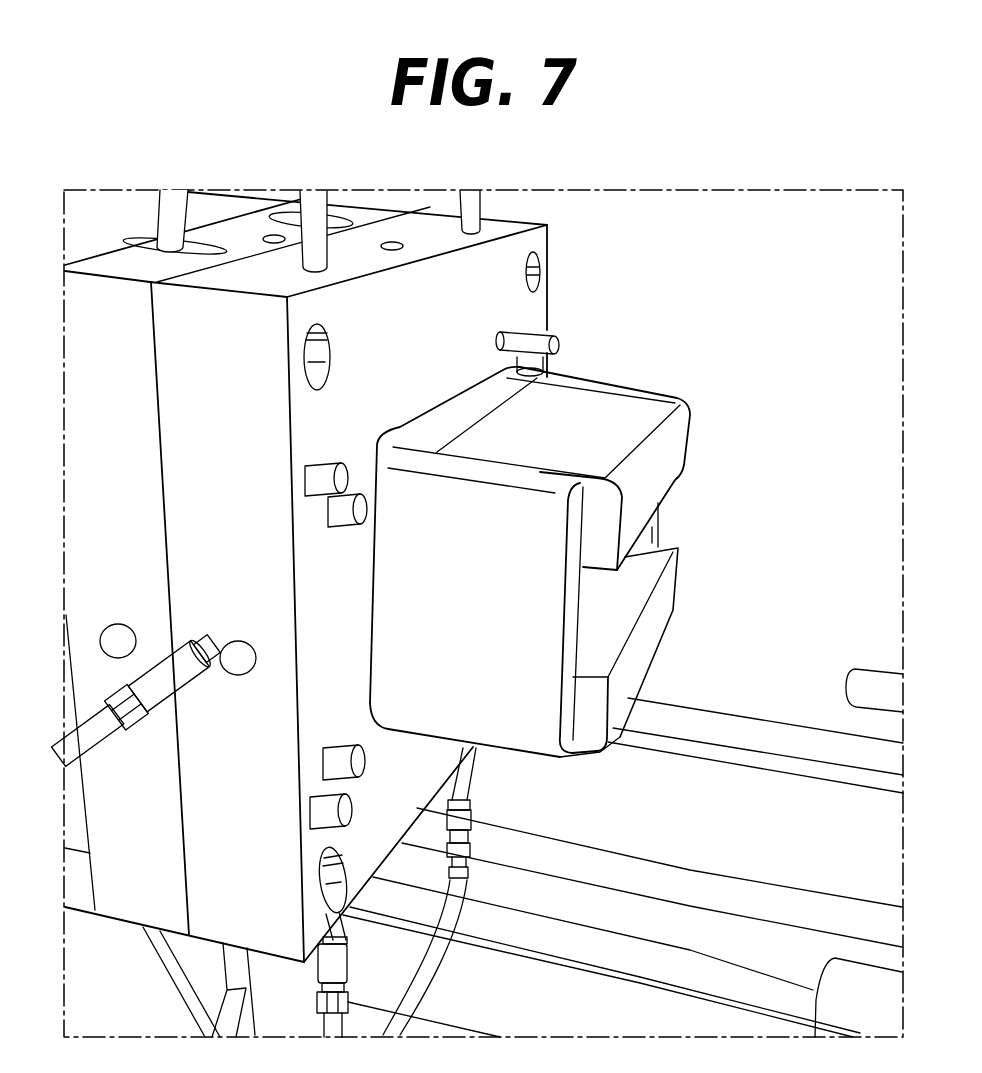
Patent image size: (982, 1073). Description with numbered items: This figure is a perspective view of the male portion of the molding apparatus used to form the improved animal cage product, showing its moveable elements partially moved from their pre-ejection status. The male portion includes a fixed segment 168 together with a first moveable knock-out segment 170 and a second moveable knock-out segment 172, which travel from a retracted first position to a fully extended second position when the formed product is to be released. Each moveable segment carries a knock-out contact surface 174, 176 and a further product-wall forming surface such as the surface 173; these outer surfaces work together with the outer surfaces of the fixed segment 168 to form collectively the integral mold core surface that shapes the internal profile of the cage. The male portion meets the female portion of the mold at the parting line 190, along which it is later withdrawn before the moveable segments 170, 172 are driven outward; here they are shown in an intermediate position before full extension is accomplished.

The parting line 190 is at (517, 230).
The product-wall forming surface 173 is at (603, 420).
The knock-out contact surface 174 is at (668, 454).
The first moveable knock-out segment 170 is at (598, 512).
The fixed segment 168 is at (533, 528).
The second moveable knock-out segment 172 is at (643, 657).
The knock-out contact surface 176 is at (622, 686).